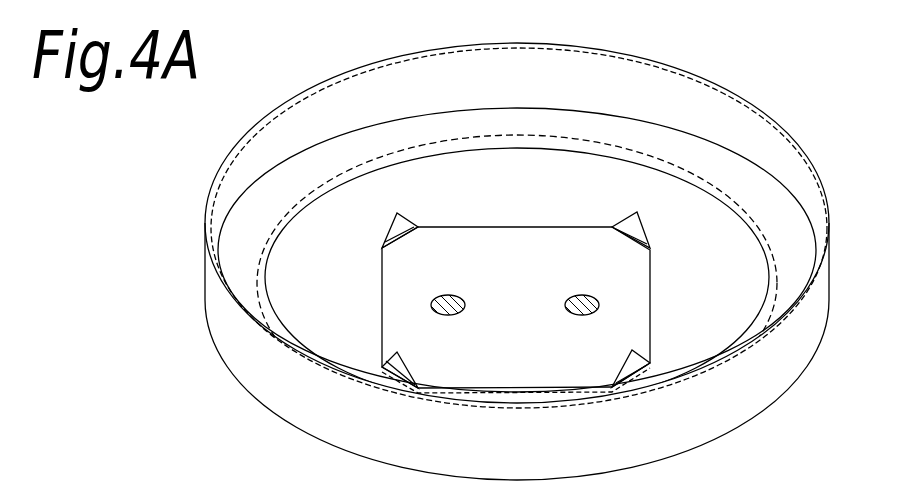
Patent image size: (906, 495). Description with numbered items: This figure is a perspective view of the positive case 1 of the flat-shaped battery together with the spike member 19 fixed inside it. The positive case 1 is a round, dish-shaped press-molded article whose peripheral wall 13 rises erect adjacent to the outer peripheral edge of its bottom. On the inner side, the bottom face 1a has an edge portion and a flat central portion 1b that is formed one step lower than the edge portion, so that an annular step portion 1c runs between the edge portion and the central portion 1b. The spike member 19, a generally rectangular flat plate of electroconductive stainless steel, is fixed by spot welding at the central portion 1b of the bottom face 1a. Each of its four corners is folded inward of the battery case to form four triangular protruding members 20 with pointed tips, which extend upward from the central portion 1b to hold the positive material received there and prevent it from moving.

The positive case 1 is at (262, 412).
The bottom face 1a is at (663, 146).
The central portion 1b is at (568, 168).
The annular step portion 1c is at (687, 173).
The peripheral wall 13 is at (808, 322).
The spike member 19 is at (523, 226).
The protruding members 20 is at (413, 222).